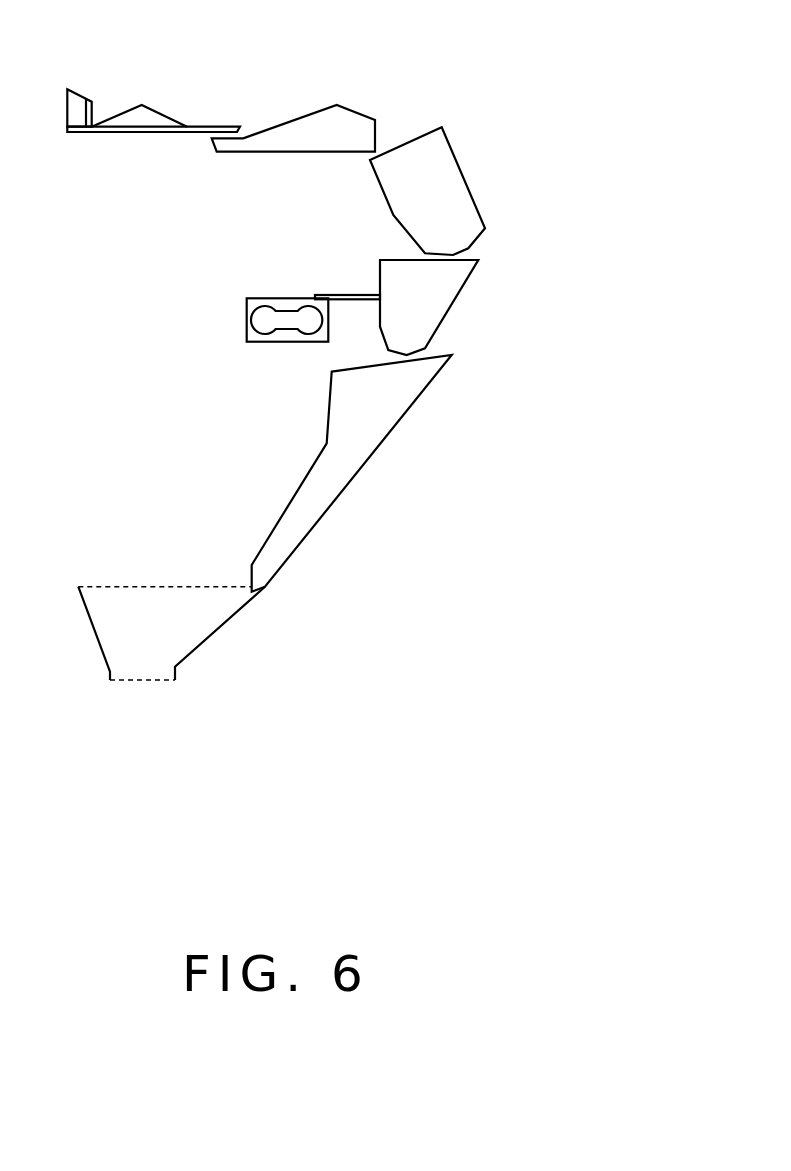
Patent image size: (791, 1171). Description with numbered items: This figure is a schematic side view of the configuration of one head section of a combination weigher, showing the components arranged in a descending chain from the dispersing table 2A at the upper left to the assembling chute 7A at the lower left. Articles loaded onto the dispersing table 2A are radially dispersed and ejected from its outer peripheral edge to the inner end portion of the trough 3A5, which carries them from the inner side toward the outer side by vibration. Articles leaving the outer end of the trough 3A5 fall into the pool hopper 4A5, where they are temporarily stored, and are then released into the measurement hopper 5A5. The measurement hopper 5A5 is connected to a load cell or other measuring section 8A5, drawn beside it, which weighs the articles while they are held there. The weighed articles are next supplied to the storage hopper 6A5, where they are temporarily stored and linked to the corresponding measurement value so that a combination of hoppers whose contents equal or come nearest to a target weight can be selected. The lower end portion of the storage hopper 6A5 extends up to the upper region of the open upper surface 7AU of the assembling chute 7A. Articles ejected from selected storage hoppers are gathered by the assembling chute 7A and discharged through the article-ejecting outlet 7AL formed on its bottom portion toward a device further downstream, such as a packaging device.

The dispersing table 2A is at (142, 118).
The trough 3A5 is at (348, 127).
The pool hopper 4A5 is at (438, 170).
The measurement hopper 5A5 is at (427, 305).
The storage hopper 6A5 is at (365, 432).
The assembling chute 7A is at (188, 625).
The open upper surface 7AU is at (157, 585).
The article-ejecting outlet 7AL is at (142, 682).
The measuring section 8A5 is at (247, 327).